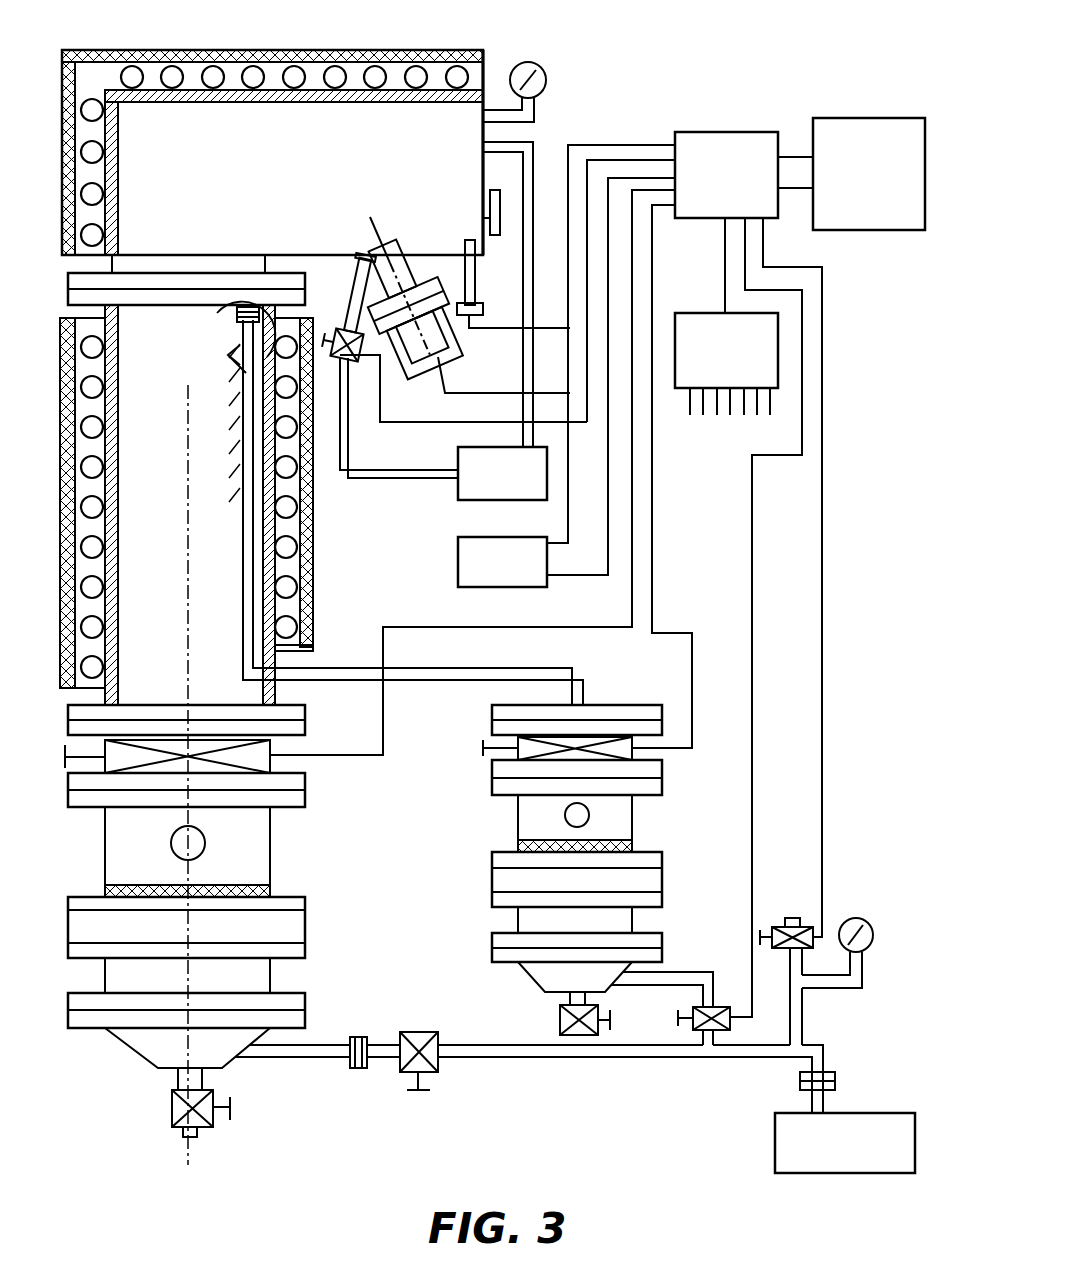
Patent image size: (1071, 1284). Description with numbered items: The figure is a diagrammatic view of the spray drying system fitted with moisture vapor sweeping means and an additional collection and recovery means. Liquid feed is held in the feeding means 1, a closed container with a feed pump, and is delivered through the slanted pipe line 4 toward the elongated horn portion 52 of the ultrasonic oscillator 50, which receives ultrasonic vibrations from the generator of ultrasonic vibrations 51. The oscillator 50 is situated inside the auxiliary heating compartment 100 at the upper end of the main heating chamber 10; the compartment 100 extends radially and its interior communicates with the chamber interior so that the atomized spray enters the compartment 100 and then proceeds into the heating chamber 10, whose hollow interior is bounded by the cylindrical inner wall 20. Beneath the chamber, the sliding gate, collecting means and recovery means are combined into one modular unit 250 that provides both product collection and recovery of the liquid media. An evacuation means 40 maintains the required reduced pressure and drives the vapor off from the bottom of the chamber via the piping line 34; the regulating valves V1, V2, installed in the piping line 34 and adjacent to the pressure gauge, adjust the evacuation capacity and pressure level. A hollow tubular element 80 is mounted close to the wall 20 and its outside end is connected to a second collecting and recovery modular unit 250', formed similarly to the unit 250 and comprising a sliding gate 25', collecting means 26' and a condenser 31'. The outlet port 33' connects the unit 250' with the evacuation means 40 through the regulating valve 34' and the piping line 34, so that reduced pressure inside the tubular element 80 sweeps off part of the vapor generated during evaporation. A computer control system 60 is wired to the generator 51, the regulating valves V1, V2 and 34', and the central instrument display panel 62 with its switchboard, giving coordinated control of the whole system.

The auxiliary heating compartment 100 is at (350, 45).
The inner wall 20 is at (117, 437).
The heating chamber 10 is at (314, 557).
The hollow tubular element 80 is at (247, 538).
The ultrasonic oscillator 50 is at (455, 348).
The elongated horn portion 52 is at (398, 253).
The slanted pipe line 4 is at (349, 440).
The feeding means 1 is at (458, 492).
The generator of ultrasonic vibrations 51 is at (458, 578).
The computer control system 60 is at (735, 130).
The central instrument display panel 62 is at (856, 118).
The modular unit 250 is at (234, 921).
The collecting and recovery modular unit 250' is at (527, 833).
The sliding gate 25' is at (539, 737).
The collecting means 26' is at (610, 823).
The condenser 31' is at (560, 998).
The outlet port 33' is at (662, 1008).
The regulating valve 34' is at (707, 985).
The piping line 34 is at (535, 1075).
The regulating valve V1 is at (415, 1032).
The regulating valve V2 is at (785, 920).
The evacuation means 40 is at (775, 1135).